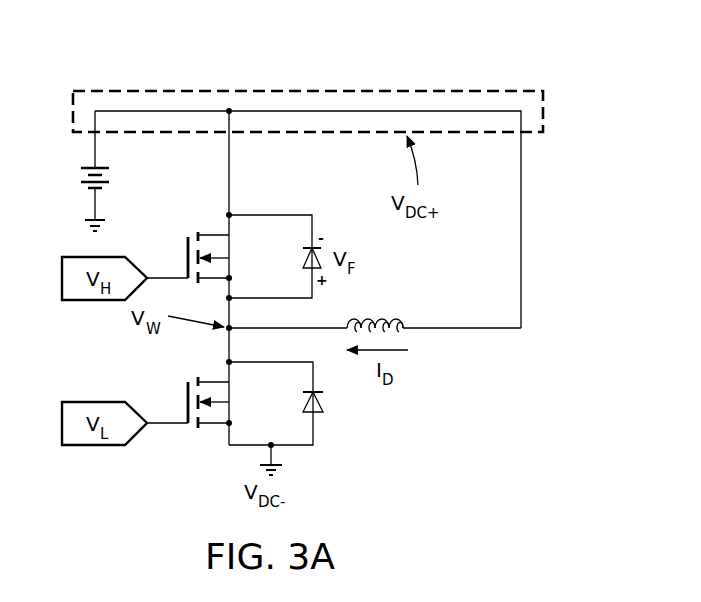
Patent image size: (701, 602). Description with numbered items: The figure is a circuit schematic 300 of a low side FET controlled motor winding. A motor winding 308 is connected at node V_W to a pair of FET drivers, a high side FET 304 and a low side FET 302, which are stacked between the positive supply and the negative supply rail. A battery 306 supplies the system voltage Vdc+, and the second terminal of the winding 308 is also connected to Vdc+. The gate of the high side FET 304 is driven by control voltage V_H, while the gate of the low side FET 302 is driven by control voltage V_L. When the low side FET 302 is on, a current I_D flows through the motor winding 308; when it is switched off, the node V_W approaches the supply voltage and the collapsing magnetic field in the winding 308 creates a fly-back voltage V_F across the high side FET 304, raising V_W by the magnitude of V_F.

The schematic 300 is at (409, 67).
The low side FET 302 is at (185, 393).
The high side FET 304 is at (185, 245).
The battery 306 is at (75, 183).
The motor winding 308 is at (377, 318).